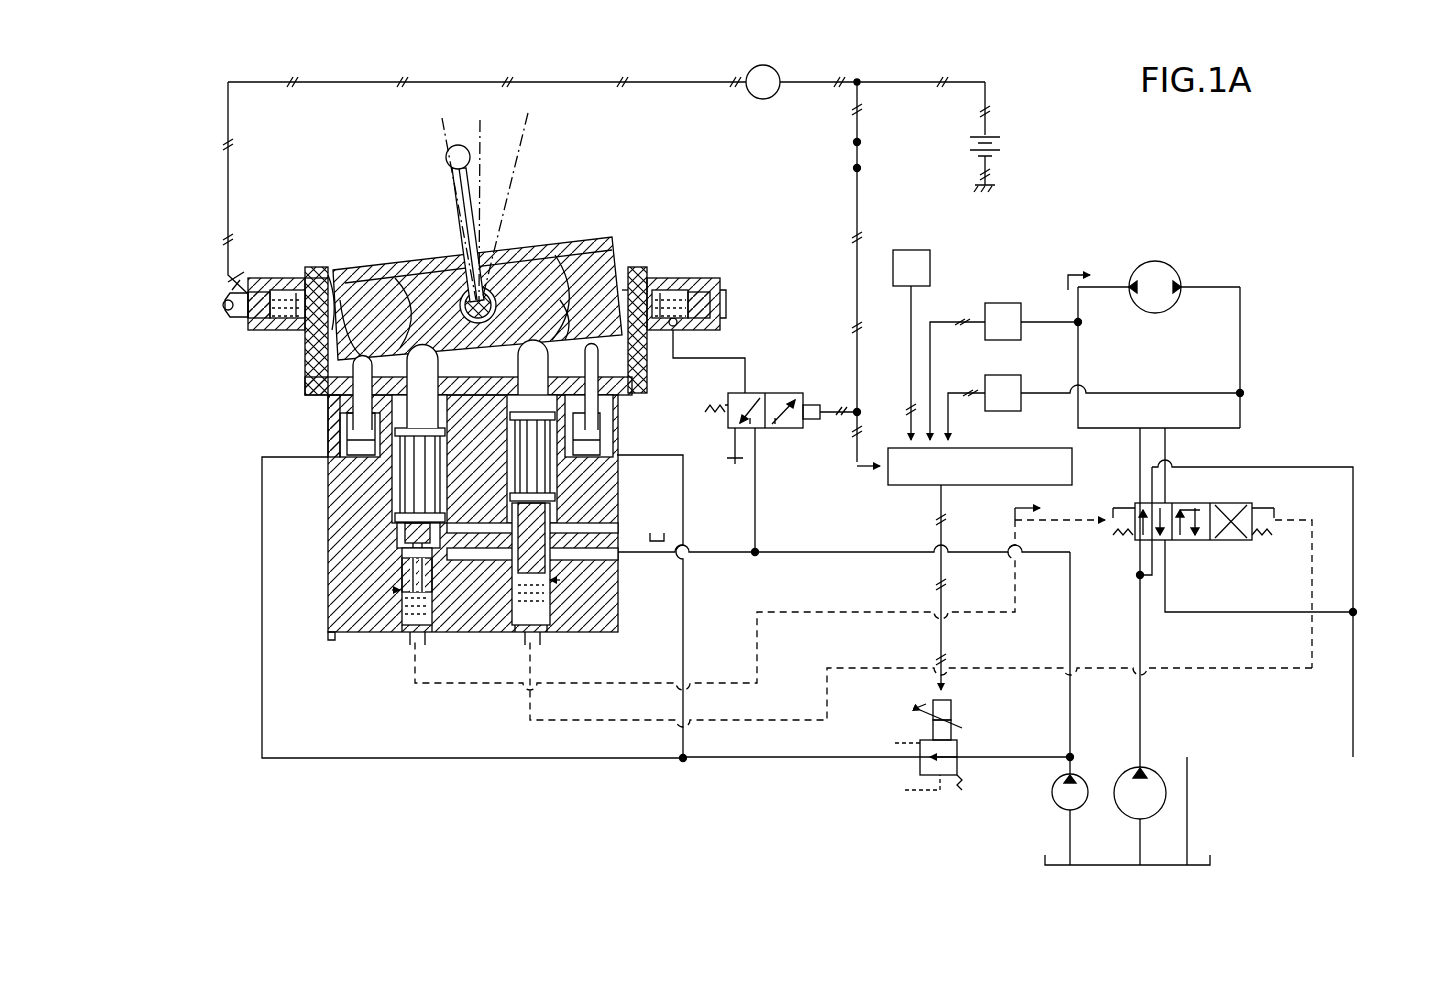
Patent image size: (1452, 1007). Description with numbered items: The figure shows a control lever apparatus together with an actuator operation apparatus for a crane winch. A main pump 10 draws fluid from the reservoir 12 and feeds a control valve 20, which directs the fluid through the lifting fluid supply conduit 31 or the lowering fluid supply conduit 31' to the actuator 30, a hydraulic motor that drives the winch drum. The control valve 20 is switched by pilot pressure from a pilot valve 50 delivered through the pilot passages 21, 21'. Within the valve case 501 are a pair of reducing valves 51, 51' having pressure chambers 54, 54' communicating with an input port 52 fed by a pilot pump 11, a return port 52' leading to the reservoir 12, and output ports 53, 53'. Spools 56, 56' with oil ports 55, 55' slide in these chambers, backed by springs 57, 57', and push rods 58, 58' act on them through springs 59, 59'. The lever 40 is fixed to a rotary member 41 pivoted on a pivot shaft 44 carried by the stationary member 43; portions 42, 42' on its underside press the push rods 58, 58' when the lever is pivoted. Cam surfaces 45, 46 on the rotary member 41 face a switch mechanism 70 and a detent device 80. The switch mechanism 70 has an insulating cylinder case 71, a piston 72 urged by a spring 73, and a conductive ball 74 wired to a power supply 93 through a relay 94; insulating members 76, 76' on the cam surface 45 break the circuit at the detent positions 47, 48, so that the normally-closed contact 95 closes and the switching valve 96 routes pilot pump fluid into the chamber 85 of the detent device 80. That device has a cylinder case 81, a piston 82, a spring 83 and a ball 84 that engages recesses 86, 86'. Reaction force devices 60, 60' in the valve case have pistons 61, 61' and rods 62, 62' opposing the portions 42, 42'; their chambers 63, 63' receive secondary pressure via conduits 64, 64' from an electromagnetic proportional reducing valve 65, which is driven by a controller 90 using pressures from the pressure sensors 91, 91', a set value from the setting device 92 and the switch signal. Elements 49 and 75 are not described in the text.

The main pump 10 is at (1160, 770).
The pilot pump 11 is at (1052, 792).
The reservoir 12 is at (1195, 860).
The control valve 20 is at (1250, 503).
The pilot passage 21 is at (1227, 597).
The pilot passage 21' is at (863, 623).
The actuator 30 is at (1155, 261).
The lifting fluid supply conduit 31 is at (1158, 357).
The lowering fluid supply conduit 31' is at (1197, 357).
The lever 40 is at (455, 215).
The rotary member 41 is at (518, 270).
The portion 42 is at (389, 291).
The portion 42' is at (578, 334).
The stationary member 43 is at (312, 272).
The pivot shaft 44 is at (462, 292).
The cam surface 45 is at (328, 332).
The cam surface 46 is at (640, 268).
The detent position 47 is at (442, 125).
The detent position 48 is at (522, 125).
The lever knob 49 is at (446, 157).
The pilot valve 50 is at (328, 632).
The valve case 501 is at (355, 632).
The reducing valve 51 is at (358, 620).
The reducing valve 51' is at (599, 630).
The input port 52 is at (561, 556).
The return port 52' is at (597, 562).
The output port 53 is at (434, 657).
The output port 53' is at (510, 657).
The pressure chamber 54 is at (362, 540).
The pressure chamber 54' is at (678, 516).
The oil port 55 is at (358, 586).
The oil port 55' is at (589, 650).
The spool 56 is at (356, 594).
The spool 56' is at (600, 599).
The spring 57 is at (396, 650).
The spring 57' is at (554, 650).
The push rod 58 is at (416, 387).
The push rod 58' is at (558, 295).
The spring 59 is at (365, 459).
The spring 59' is at (595, 459).
The reaction force device 60 is at (300, 435).
The reaction force device 60' is at (662, 410).
The piston 61 is at (297, 443).
The piston 61' is at (652, 434).
The rod 62 is at (448, 400).
The rod 62' is at (690, 375).
The chamber 63 is at (324, 444).
The chamber 63' is at (621, 426).
The conduit 64 is at (431, 608).
The conduit 64' is at (688, 487).
The electromagnetic proportional reducing valve 65 is at (957, 748).
The switch mechanism 70 is at (280, 283).
The cylinder case 71 is at (250, 302).
The piston 72 is at (265, 310).
The spring 73 is at (246, 278).
The ball 74 is at (350, 290).
The contact bolt 75 is at (235, 303).
The insulating member 76 is at (341, 270).
The insulating member 76' is at (275, 387).
The detent device 80 is at (716, 300).
The cylinder case 81 is at (716, 326).
The piston 82 is at (665, 280).
The spring 83 is at (690, 282).
The ball 84 is at (558, 268).
The chamber 85 is at (712, 282).
The recess 86 is at (726, 355).
The recess 86' is at (624, 232).
The controller 90 is at (1000, 448).
The pressure sensor 91 is at (1004, 336).
The pressure sensor 91' is at (1088, 390).
The setting device 92 is at (911, 250).
The power supply 93 is at (1005, 135).
The relay 94 is at (758, 97).
The normally-closed contact 95 is at (855, 155).
The switching valve 96 is at (800, 400).